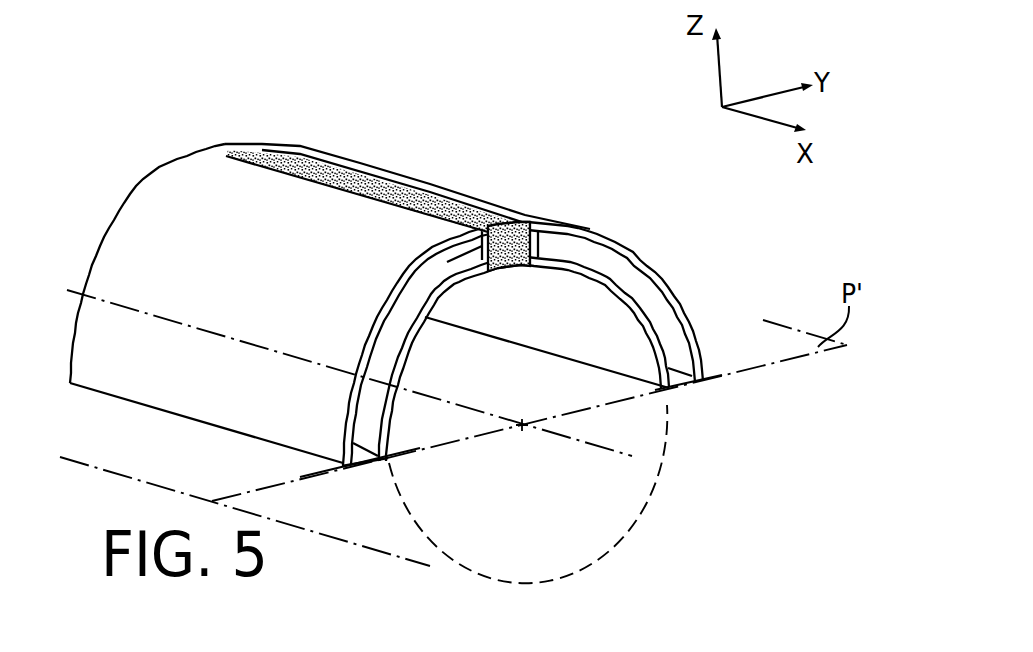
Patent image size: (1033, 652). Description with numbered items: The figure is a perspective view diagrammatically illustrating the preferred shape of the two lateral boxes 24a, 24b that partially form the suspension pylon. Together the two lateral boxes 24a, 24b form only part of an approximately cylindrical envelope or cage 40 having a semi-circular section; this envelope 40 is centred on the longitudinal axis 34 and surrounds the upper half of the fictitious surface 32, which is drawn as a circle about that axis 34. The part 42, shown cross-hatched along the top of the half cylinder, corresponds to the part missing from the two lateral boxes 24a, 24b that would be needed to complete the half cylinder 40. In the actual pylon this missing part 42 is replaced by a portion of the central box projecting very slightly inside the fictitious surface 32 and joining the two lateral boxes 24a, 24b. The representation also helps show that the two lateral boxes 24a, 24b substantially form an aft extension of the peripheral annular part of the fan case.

The lateral box 24a is at (131, 236).
The lateral box 24b is at (600, 230).
The cylindrical envelope/cage 40 is at (613, 222).
The missing part 42 is at (317, 164).
The fictitious surface 32 is at (638, 492).
The longitudinal axis 34 is at (671, 467).